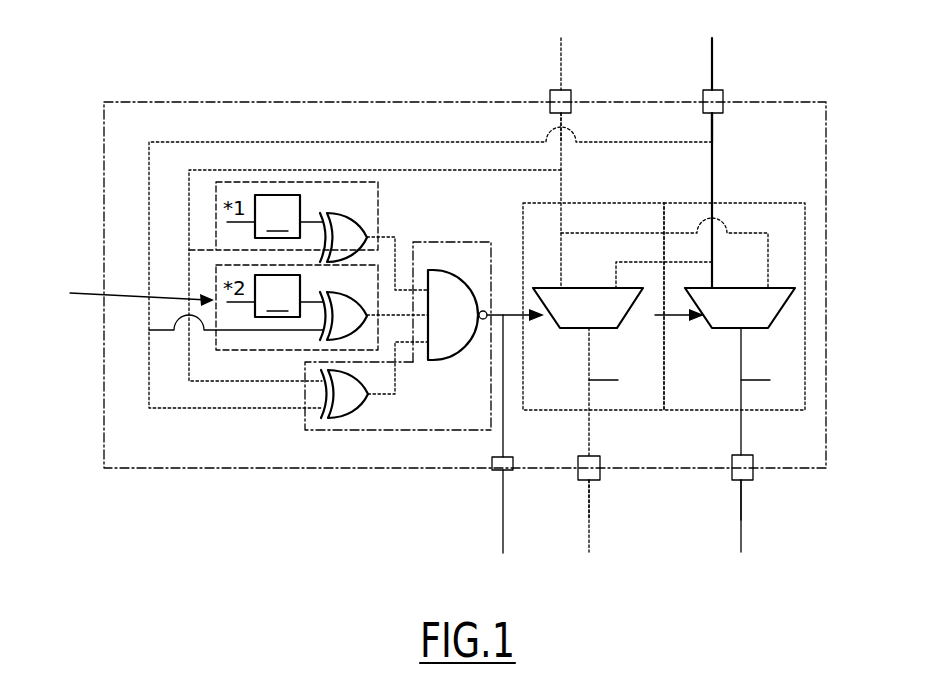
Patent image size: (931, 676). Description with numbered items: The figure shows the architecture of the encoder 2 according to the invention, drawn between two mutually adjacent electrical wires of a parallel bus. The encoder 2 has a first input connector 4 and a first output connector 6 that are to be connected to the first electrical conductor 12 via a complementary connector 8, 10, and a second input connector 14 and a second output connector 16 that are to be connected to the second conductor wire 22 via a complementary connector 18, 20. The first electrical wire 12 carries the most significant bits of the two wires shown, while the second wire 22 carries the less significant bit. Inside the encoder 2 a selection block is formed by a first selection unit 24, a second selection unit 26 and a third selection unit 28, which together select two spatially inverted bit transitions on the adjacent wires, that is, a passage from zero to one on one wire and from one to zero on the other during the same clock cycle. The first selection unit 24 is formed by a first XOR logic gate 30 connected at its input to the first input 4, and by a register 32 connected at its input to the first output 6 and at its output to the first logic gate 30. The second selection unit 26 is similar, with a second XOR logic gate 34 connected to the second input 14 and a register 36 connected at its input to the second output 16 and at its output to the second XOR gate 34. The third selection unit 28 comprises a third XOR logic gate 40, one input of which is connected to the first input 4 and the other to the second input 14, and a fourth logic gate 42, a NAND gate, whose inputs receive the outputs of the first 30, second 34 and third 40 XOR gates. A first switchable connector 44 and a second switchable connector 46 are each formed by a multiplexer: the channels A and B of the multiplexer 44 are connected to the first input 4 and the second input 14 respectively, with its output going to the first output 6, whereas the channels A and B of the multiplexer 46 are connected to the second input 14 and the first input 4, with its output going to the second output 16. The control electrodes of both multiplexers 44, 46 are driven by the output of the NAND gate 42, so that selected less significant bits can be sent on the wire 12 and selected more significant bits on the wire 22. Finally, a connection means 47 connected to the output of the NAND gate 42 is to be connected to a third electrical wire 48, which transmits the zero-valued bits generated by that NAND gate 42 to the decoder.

The encoder 2 is at (156, 471).
The first input connector 4 is at (552, 107).
The first output connector 6 is at (592, 462).
The complementary connector 8 is at (572, 95).
The complementary connector 10 is at (598, 473).
The first electrical conductor 12 is at (560, 55).
The second input connector 14 is at (723, 110).
The second output connector 16 is at (747, 457).
The complementary connector 18 is at (723, 98).
The complementary connector 20 is at (748, 477).
The second conductor wire 22 is at (712, 62).
The first selection unit 24 is at (299, 179).
The second selection unit 26 is at (129, 290).
The third selection unit 28 is at (396, 434).
The first XOR logic gate 30 is at (350, 228).
The register 32 is at (277, 216).
The second logic gate 34 is at (343, 337).
The register 36 is at (277, 296).
The third logic gate 40 is at (342, 420).
The fourth logic gate 42 is at (447, 287).
The first switchable connector 44 is at (620, 203).
The second switchable connector 46 is at (757, 203).
The connection means 47 is at (508, 463).
The third electrical wire 48 is at (502, 532).